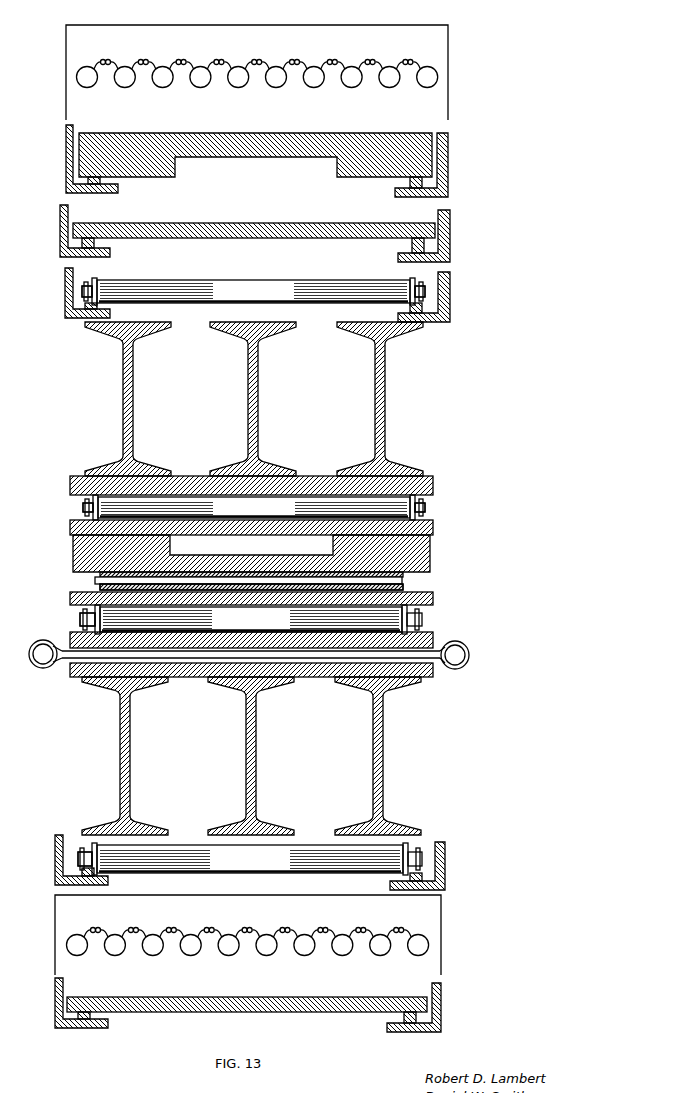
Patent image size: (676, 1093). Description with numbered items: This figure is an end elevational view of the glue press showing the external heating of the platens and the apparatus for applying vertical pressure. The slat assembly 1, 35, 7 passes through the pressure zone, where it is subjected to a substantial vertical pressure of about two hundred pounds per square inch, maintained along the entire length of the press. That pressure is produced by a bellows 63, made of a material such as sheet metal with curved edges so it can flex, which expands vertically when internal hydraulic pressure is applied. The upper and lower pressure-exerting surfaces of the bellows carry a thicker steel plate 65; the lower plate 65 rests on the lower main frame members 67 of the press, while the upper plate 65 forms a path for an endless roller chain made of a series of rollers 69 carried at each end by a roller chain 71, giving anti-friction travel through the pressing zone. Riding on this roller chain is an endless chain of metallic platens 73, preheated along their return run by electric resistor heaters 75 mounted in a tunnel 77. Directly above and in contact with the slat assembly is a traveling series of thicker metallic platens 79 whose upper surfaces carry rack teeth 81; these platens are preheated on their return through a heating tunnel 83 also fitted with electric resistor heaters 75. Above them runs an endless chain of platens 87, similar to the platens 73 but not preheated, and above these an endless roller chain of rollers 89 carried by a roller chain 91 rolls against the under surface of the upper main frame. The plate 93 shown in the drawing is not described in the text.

The slat assembly 1 is at (403, 578).
The slat assembly 7 is at (100, 588).
The slat assembly 35 is at (403, 586).
The bellows 63 is at (470, 655).
The steel plate 65 is at (433, 638).
The lower main frame members 67 is at (255, 752).
The rollers 69 is at (232, 620).
The roller chain 71 is at (80, 613).
The metallic platens 73 is at (435, 602).
The electric resistor heaters 75 is at (95, 61).
The tunnel 77 is at (441, 941).
The thicker metallic platens 79 is at (420, 134).
The rack teeth 81 is at (233, 166).
The heating tunnel 83 is at (66, 80).
The platens 87 is at (322, 226).
The rollers 89 is at (292, 282).
The roller chain 91 is at (417, 284).
The plate 93 is at (79, 473).